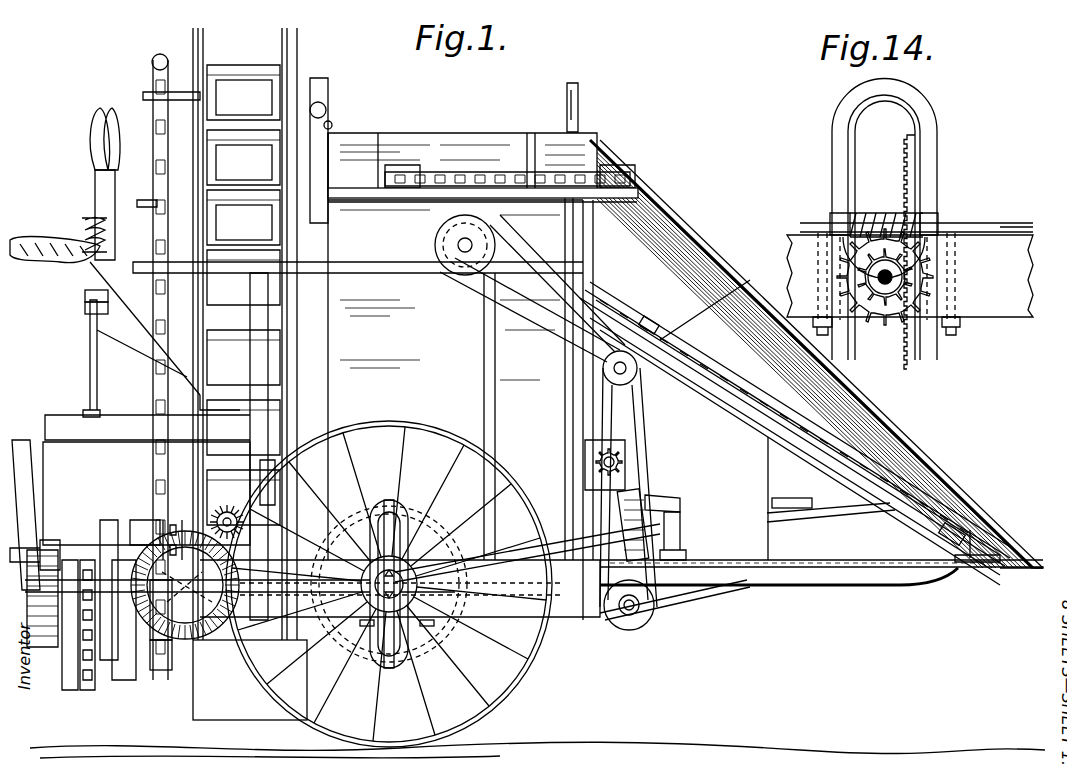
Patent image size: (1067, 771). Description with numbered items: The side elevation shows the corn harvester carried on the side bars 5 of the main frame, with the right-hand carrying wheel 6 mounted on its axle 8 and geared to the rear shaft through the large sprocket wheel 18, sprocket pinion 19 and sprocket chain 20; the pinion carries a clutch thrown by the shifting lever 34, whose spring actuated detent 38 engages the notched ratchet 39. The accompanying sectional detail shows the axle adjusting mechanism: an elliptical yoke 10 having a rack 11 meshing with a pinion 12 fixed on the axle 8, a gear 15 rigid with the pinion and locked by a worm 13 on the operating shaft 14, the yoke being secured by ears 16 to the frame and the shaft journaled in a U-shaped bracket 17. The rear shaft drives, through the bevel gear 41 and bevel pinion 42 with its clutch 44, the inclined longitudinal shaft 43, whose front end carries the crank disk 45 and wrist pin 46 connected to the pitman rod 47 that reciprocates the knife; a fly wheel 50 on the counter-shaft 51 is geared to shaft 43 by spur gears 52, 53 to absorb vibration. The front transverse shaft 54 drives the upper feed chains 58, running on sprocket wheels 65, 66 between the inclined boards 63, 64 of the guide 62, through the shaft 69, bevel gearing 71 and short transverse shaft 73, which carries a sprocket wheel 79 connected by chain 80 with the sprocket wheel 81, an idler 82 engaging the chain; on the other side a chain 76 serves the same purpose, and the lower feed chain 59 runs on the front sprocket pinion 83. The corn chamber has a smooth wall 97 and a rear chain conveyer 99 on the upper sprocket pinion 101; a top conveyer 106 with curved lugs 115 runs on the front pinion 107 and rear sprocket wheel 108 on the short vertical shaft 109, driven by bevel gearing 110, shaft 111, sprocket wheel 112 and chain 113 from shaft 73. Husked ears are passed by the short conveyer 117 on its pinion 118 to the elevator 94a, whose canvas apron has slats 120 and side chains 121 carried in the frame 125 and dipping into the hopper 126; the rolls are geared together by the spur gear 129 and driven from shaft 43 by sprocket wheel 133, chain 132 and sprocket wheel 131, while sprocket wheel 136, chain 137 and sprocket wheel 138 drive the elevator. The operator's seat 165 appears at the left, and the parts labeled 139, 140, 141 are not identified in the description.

In FIG. 1, the side bars or members 5 is at (621, 588).
In FIG. 14, the side bars or members 5 is at (910, 276).
In FIG. 1, the carrying wheel 6 is at (408, 442).
In FIG. 14, the shaft or axle 8 is at (902, 280).
In FIG. 1, the vertical yoke 10 is at (406, 540).
In FIG. 14, the vertical yoke 10 is at (920, 98).
In FIG. 1, the rack 11 is at (362, 626).
In FIG. 14, the rack 11 is at (922, 143).
In FIG. 14, the pinion 12 is at (895, 320).
In FIG. 14, the worm 13 is at (872, 212).
In FIG. 1, the operating shaft 14 is at (330, 555).
In FIG. 14, the operating shaft 14 is at (988, 222).
In FIG. 14, the gear 15 is at (880, 310).
In FIG. 1, the projecting ears or flanges 16 is at (432, 624).
In FIG. 14, the projecting ears or flanges 16 is at (813, 228).
In FIG. 1, the U-shaped bracket 17 is at (445, 594).
In FIG. 14, the U-shaped bracket 17 is at (840, 242).
In FIG. 1, the large sprocket wheel 18 is at (409, 500).
In FIG. 1, the sprocket pinion 19 is at (185, 585).
In FIG. 1, the sprocket chain 20 is at (358, 492).
In FIG. 1, the shifting lever 34 is at (104, 108).
In FIG. 1, the spring actuated detent 38 is at (85, 296).
In FIG. 1, the ratchet 39 is at (88, 310).
In FIG. 1, the bevel gear 41 is at (172, 660).
In FIG. 1, the bevel pinion 42 is at (189, 593).
In FIG. 1, the longitudinal shaft 43 is at (505, 548).
In FIG. 1, the clutch 44 is at (292, 597).
In FIG. 1, the crank disk 45 is at (638, 495).
In FIG. 1, the wrist pin 46 is at (680, 500).
In FIG. 1, the pitman rod 47 is at (672, 528).
In FIG. 1, the balance or fly wheel 50 is at (26, 503).
In FIG. 1, the counter-shaft 51 is at (60, 540).
In FIG. 1, the spur gear 52 is at (146, 493).
In FIG. 1, the spur gear 53 is at (115, 660).
In FIG. 1, the front transverse shaft 54 is at (625, 612).
In FIG. 1, the upper endless chain 58 is at (750, 400).
In FIG. 1, the lower endless chain 59 is at (778, 498).
In FIG. 1, the guide 62 is at (1021, 540).
In FIG. 1, the inclined board or member 63 is at (718, 255).
In FIG. 1, the inclined board or member 64 is at (700, 380).
In FIG. 1, the front sprocket wheel 65 is at (950, 525).
In FIG. 1, the rear sprocket wheel 66 is at (630, 318).
In FIG. 1, the shaft 69 is at (660, 330).
In FIG. 1, the bevel gearing 71 is at (672, 348).
In FIG. 1, the short transverse shaft 73 is at (637, 372).
In FIG. 1, the sprocket chain 76 is at (710, 598).
In FIG. 1, the sprocket wheel 79 is at (628, 487).
In FIG. 1, the sprocket chain 80 is at (646, 440).
In FIG. 1, the sprocket wheel 81 is at (634, 626).
In FIG. 1, the idler 82 is at (597, 462).
In FIG. 1, the front sprocket pinion 83 is at (790, 498).
In FIG. 1, the elevator 94a is at (245, 334).
In FIG. 1, the smooth continuous wall 97 is at (363, 376).
In FIG. 1, the endless chain conveyer 99 is at (333, 124).
In FIG. 1, the upper sprocket pinion 101 is at (330, 108).
In FIG. 1, the top horizontal endless chain conveyer 106 is at (525, 200).
In FIG. 1, the front horizontal sprocket pinion 107 is at (598, 160).
In FIG. 1, the horizontal rear sprocket wheel 108 is at (488, 172).
In FIG. 1, the short substantially vertical shaft 109 is at (455, 172).
In FIG. 1, the bevel gearing 110 is at (515, 246).
In FIG. 1, the short transversely disposed shaft 111 is at (435, 245).
In FIG. 1, the sprocket wheel 112 is at (455, 272).
In FIG. 1, the sprocket chain 113 is at (528, 322).
In FIG. 1, the fingers or lugs 115 is at (398, 190).
In FIG. 1, the short endless chain conveyer 117 is at (260, 475).
In FIG. 1, the upper sprocket pinion 118 is at (320, 407).
In FIG. 1, the transverse slats 120 is at (244, 97).
In FIG. 1, the endless chains 121 is at (244, 192).
In FIG. 1, the frame 125 is at (198, 215).
In FIG. 1, the hopper or tapered casing 126 is at (250, 680).
In FIG. 1, the spur gear 129 is at (132, 642).
In FIG. 1, the sprocket wheel 131 is at (88, 690).
In FIG. 1, the sprocket chain 132 is at (85, 665).
In FIG. 1, the sprocket wheel 133 is at (70, 630).
In FIG. 1, the sprocket wheel 136 is at (168, 670).
In FIG. 1, the sprocket chain 137 is at (153, 165).
In FIG. 1, the sprocket wheel 138 is at (152, 62).
In FIG. 1, the chain 139 is at (175, 520).
In FIG. 1, the bearing block 140 is at (141, 519).
In FIG. 1, the sprocket 141 is at (228, 508).
In FIG. 1, the seat 165 is at (57, 240).